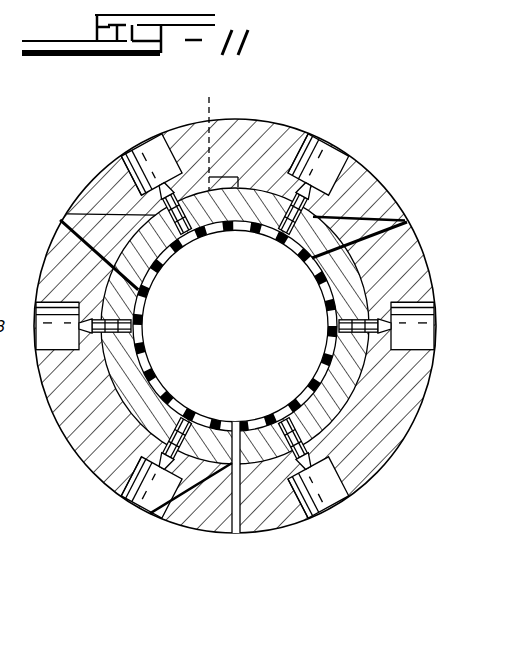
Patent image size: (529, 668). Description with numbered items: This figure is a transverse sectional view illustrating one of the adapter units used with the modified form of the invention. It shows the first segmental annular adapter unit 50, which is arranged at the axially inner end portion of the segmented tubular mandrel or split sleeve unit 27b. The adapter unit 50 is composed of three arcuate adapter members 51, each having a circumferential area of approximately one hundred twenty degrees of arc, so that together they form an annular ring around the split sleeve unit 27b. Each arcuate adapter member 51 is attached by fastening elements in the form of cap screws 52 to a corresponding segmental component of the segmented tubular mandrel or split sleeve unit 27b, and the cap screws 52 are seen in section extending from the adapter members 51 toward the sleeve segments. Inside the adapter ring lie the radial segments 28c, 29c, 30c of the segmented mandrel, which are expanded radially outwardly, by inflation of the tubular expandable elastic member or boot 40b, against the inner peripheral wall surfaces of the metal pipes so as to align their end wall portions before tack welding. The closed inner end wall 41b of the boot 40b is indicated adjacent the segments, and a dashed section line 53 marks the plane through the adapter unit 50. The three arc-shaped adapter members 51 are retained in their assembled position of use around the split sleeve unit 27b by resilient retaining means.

The first segmental annular adapter unit 50 is at (293, 126).
The arcuate adapter member 51 is at (255, 138).
The cap screw 52 is at (143, 170).
The section plane 53 is at (219, 135).
The wedge key 41b is at (410, 228).
The inner bearing sleeve 40b is at (175, 266).
The radial segment 28c is at (240, 226).
The radial segment 29c is at (343, 383).
The radial segment 30c is at (145, 408).
The segmented tubular mandrel or split sleeve unit 27b is at (266, 438).